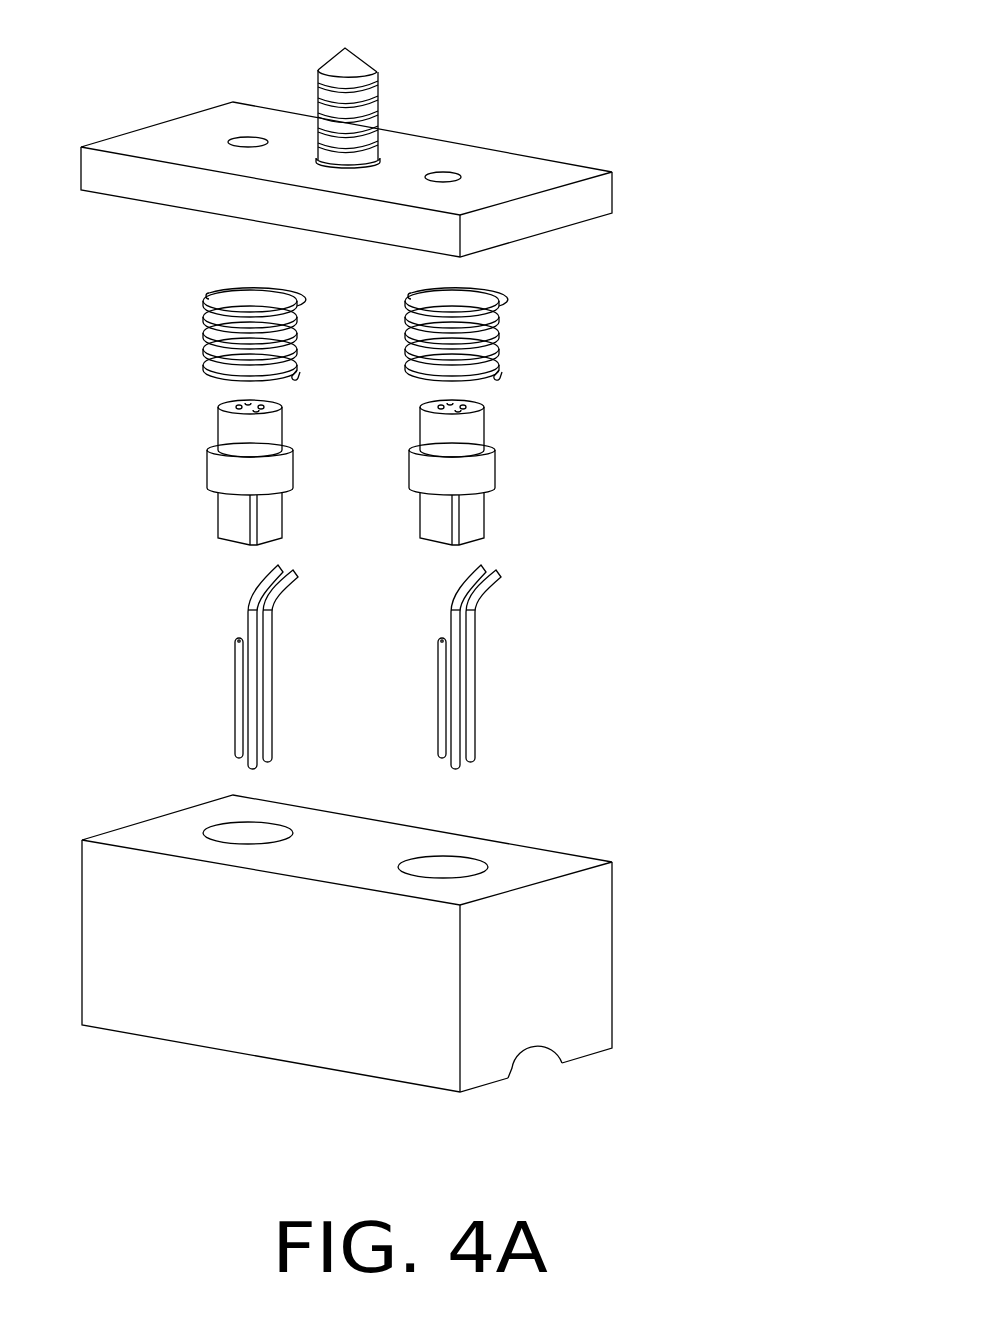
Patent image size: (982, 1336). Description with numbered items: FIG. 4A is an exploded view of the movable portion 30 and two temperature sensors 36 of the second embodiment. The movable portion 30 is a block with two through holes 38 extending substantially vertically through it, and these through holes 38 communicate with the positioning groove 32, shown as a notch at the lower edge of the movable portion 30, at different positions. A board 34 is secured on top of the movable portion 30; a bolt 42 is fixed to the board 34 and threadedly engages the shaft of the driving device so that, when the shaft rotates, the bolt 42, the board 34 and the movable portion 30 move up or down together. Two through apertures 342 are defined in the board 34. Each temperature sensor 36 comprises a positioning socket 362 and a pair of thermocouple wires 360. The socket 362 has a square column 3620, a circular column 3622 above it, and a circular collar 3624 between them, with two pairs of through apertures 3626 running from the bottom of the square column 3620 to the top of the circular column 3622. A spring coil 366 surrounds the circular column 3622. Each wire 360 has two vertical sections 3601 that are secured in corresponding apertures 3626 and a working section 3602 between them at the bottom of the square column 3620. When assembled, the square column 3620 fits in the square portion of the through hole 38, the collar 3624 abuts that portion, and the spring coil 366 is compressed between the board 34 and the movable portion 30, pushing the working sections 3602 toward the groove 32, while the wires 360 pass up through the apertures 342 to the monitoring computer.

The movable portion 30 is at (583, 898).
The positioning groove 32 is at (533, 1052).
The board 34 is at (593, 192).
The through apertures 342 is at (447, 173).
The temperature sensor 36 is at (778, 315).
The thermocouple wires 360 is at (473, 632).
The vertical sections 3601 is at (254, 698).
The working section 3602 is at (264, 760).
The positioning socket 362 is at (671, 370).
The square column 3620 is at (473, 515).
The circular column 3622 is at (474, 430).
The circular collar 3624 is at (482, 472).
The through apertures 3626 is at (478, 404).
The spring coil 366 is at (499, 320).
The through holes 38 is at (455, 870).
The bolt 42 is at (379, 91).